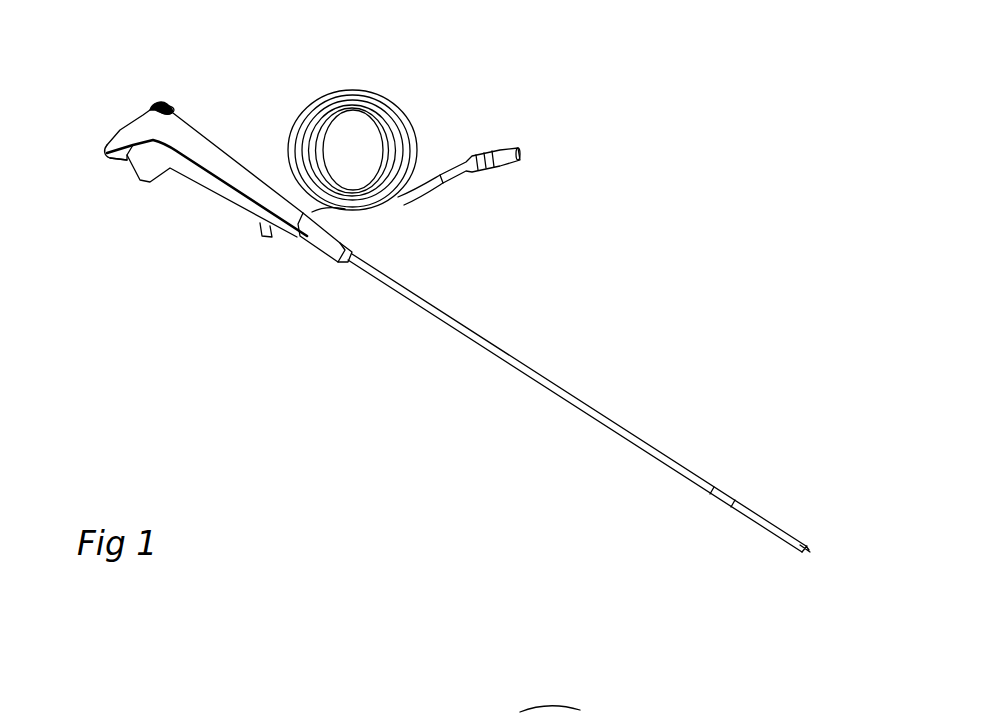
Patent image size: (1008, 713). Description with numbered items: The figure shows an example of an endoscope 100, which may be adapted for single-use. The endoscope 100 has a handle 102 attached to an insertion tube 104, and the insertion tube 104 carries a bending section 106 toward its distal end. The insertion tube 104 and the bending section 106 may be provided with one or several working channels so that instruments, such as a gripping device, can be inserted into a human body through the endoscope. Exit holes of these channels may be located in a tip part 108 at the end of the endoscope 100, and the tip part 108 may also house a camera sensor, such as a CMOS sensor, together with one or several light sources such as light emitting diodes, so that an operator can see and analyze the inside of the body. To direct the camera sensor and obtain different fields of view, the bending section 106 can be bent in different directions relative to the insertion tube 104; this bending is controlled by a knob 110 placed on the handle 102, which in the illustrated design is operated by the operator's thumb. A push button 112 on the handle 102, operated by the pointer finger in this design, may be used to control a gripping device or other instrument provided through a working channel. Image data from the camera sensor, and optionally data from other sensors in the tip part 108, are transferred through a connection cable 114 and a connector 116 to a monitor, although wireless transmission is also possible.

The endoscope 100 is at (272, 360).
The handle 102 is at (212, 96).
The insertion tube 104 is at (683, 447).
The bending section 106 is at (757, 513).
The tip part 108 is at (790, 545).
The knob 110 is at (163, 100).
The push button 112 is at (128, 174).
The connection cable 114 is at (403, 103).
The connector 116 is at (488, 182).